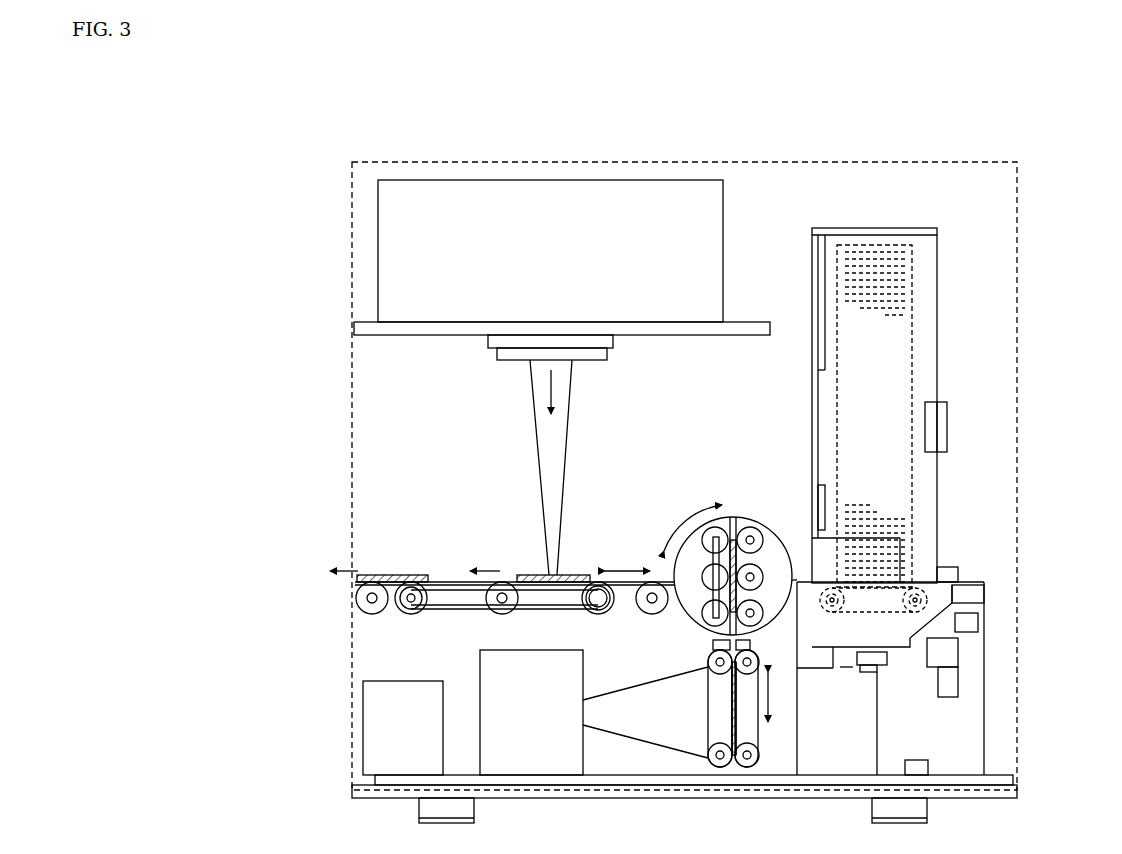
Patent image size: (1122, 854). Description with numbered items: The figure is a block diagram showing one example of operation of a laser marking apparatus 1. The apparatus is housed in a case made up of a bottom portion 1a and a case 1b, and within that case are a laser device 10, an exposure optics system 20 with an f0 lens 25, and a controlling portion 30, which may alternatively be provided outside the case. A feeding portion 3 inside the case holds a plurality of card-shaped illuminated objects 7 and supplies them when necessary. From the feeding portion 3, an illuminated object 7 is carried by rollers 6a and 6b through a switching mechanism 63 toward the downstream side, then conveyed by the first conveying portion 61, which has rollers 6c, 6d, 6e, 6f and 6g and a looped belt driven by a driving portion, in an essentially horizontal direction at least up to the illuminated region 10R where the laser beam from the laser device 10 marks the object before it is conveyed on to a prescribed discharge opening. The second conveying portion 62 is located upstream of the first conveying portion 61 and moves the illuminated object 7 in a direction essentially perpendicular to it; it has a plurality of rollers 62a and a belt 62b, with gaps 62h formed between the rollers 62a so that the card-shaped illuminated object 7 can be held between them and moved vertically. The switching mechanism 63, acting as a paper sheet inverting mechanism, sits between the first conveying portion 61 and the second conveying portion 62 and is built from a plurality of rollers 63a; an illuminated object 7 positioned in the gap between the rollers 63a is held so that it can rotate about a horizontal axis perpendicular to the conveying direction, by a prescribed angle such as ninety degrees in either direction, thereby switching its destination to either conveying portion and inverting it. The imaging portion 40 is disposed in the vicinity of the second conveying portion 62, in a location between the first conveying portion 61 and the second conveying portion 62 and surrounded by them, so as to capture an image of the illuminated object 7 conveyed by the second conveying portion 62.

The laser marking apparatus 1 is at (301, 768).
The bottom portion 1a is at (1017, 796).
The case 1b is at (1017, 585).
The feeding portion 3 is at (941, 489).
The roller 6a is at (907, 612).
The roller 6b is at (840, 612).
The roller 6c is at (652, 615).
The roller 6d is at (598, 615).
The roller 6e is at (508, 614).
The roller 6f is at (411, 615).
The roller 6g is at (372, 615).
The illuminated object 7 is at (388, 574).
The laser device 10 is at (723, 222).
The illuminated region 10R is at (514, 528).
The exposure optics system 20 is at (622, 374).
The f0 lens 25 is at (598, 361).
The controlling portion 30 is at (363, 700).
The imaging portion 40 is at (480, 677).
The first conveying portion 61 is at (644, 514).
The second conveying portion 62 is at (688, 736).
The rollers 62a is at (758, 758).
The belt 62b is at (760, 738).
The gap 62h is at (733, 760).
The switching mechanism 63 is at (768, 524).
The rollers 63a is at (749, 519).